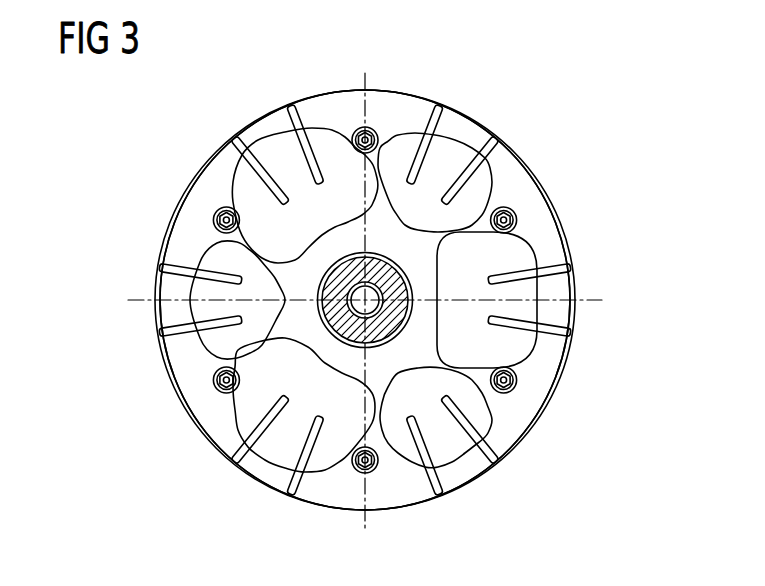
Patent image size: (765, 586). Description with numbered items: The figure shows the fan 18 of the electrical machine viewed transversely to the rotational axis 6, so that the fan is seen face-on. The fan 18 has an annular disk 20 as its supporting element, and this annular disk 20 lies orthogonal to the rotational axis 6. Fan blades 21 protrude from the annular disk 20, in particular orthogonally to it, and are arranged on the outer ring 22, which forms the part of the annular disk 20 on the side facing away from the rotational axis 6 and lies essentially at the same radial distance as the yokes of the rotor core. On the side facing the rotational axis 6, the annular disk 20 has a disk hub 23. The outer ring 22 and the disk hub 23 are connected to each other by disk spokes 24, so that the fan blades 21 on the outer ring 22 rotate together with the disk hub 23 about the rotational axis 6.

The rotational axis 6 is at (372, 307).
The fan 18 is at (591, 139).
The annular disk 20 is at (263, 116).
The outer ring 22 is at (263, 116).
The fan blades 21 is at (293, 112).
The disk hub 23 is at (423, 277).
The disk spokes 24 is at (392, 133).